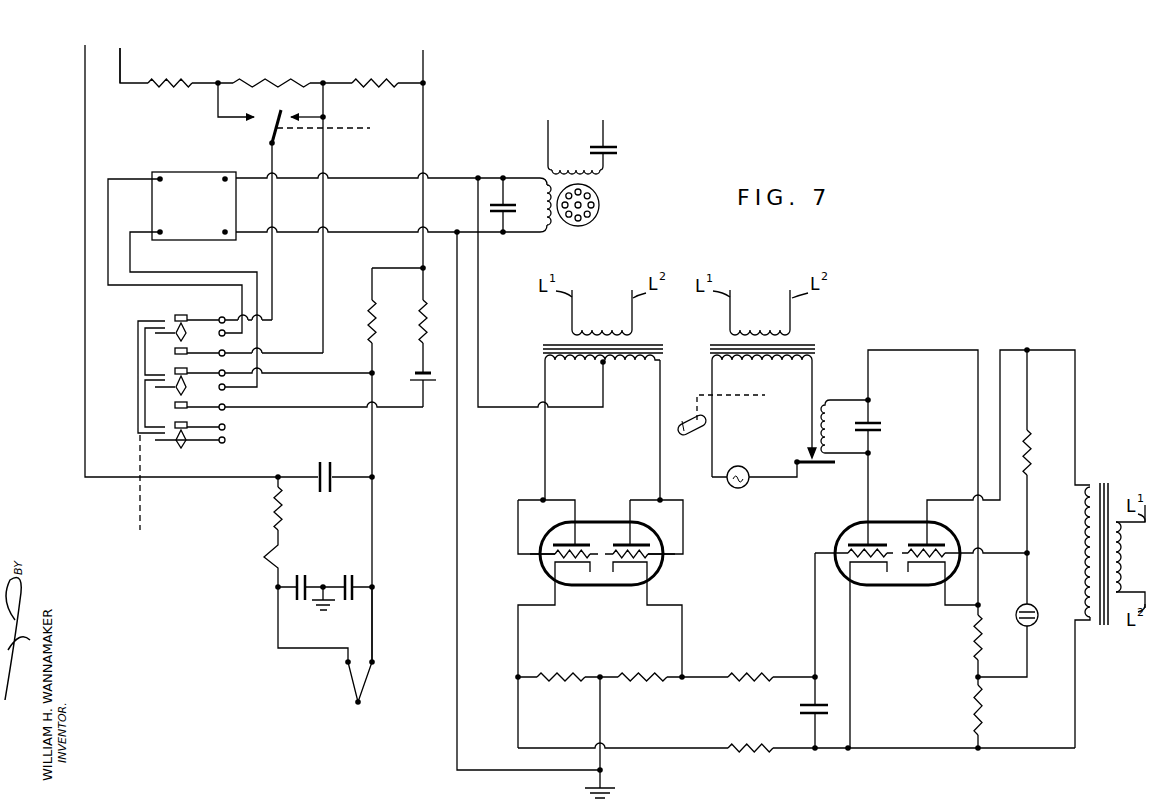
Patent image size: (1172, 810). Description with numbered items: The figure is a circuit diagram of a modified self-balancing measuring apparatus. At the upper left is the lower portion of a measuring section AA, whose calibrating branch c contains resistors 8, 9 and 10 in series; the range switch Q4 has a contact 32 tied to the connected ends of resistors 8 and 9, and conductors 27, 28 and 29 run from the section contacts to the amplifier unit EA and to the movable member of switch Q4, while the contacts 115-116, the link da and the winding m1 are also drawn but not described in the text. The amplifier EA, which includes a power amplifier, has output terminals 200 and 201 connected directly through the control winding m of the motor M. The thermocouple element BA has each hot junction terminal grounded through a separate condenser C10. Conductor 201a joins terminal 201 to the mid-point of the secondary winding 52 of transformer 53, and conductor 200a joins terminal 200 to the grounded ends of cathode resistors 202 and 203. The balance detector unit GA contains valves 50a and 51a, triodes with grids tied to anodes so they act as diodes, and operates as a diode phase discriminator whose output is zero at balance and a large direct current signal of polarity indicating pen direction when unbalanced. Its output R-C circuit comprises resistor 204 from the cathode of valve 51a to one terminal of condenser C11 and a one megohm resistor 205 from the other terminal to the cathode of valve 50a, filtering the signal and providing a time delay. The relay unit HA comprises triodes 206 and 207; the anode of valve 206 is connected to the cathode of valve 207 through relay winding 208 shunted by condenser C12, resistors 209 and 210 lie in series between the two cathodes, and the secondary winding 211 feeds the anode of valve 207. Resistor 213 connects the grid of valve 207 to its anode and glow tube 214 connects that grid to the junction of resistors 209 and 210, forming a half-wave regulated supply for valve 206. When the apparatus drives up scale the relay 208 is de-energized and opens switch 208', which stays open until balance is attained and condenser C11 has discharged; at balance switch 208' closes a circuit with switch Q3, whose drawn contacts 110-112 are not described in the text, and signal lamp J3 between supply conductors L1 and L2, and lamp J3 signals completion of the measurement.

The resistor 8 is at (166, 74).
The resistor 9 is at (268, 74).
The resistor 10 is at (380, 74).
The calibrating branch c is at (138, 89).
The switch contacts 115-116 is at (338, 128).
The amplifier unit EA is at (197, 180).
The range switch Q4 is at (262, 138).
The output terminal 201 is at (394, 174).
The output terminal 200 is at (396, 226).
The conductor 27 is at (131, 257).
The conductor 29 is at (273, 257).
The switch contact 32 is at (325, 257).
The measuring section AA is at (74, 257).
The conductor 28 is at (118, 288).
The relay armature link da is at (116, 482).
The condenser C10 is at (346, 573).
The thermocouple element BA is at (332, 698).
The conductor 200a is at (458, 478).
The conductor 201a is at (478, 325).
The transformer 53 is at (550, 335).
The transformer secondary winding 52 is at (602, 377).
The balance detector unit GA is at (678, 490).
The electronic valve 50a is at (555, 543).
The electronic valve 51a is at (641, 543).
The switch Q3 is at (696, 419).
The switch contacts 110-112 is at (722, 396).
The signal lamp J3 is at (740, 466).
The relay winding 208 is at (844, 410).
The relay controlled switch 208' is at (827, 480).
The condenser C12 is at (883, 426).
The triode 206 is at (856, 541).
The triode 207 is at (932, 540).
The resistor 213 is at (1031, 458).
The relay unit HA is at (1099, 464).
The secondary winding 211 is at (1086, 553).
The glow tube 214 is at (1036, 610).
The resistor 209 is at (971, 637).
The resistor 210 is at (973, 702).
The cathode resistor 202 is at (560, 674).
The cathode resistor 203 is at (642, 674).
The resistor 204 is at (757, 674).
The resistor 205 is at (749, 752).
The condenser C11 is at (798, 708).
The control winding m is at (540, 206).
The motor coil m1 is at (580, 166).
The motor M is at (612, 206).
The alternating current supply conductor L1 is at (547, 131).
The alternating current supply conductor L2 is at (606, 129).